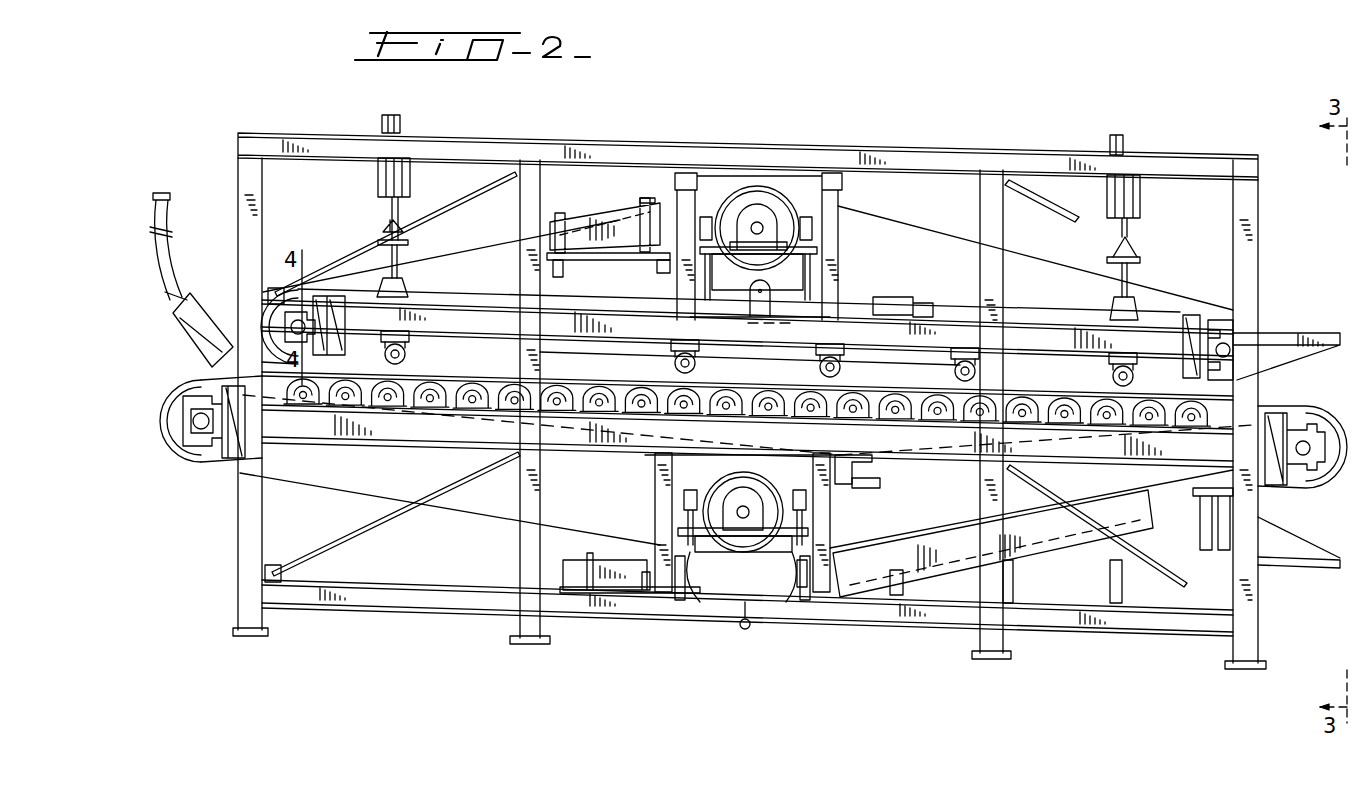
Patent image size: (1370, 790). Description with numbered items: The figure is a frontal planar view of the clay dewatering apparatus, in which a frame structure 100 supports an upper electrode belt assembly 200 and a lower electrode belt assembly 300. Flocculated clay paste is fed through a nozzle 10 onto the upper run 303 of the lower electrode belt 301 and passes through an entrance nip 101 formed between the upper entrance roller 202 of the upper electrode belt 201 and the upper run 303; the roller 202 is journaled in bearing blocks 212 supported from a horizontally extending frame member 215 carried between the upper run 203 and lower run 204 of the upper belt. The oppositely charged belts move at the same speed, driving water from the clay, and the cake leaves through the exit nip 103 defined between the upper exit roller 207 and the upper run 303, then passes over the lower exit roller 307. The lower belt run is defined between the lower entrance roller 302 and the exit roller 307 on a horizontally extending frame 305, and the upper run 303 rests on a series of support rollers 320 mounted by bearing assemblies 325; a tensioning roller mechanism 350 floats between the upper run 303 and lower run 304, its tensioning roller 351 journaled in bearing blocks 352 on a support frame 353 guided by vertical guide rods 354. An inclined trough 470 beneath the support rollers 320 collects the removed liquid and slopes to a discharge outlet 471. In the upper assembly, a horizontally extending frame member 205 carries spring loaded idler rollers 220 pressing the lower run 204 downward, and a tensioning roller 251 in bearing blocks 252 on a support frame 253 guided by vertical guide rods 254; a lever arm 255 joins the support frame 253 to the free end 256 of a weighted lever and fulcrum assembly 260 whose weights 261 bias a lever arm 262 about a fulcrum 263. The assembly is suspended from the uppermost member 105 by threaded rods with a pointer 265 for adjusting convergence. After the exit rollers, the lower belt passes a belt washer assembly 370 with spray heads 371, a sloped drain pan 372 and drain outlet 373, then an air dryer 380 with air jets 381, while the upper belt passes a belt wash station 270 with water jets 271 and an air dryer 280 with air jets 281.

The nozzle 10 is at (196, 336).
The frame structure 100 is at (548, 630).
The entrance nip 101 is at (262, 370).
The exit nip 103 is at (1236, 395).
The uppermost member 105 is at (460, 134).
The upper electrode belt assembly 200 is at (755, 392).
The upper electrode belt 201 is at (462, 246).
The upper entrance roller 202 is at (270, 314).
The upper run 203 is at (926, 229).
The lower run 204 is at (716, 360).
The horizontally extending frame member 205 is at (666, 339).
The upper exit roller 207 is at (1262, 333).
The bearing block 212 is at (312, 308).
The horizontally extending frame member 215 is at (345, 325).
The spring loaded idler rollers 220 is at (850, 373).
The tensioning roller 251 is at (750, 212).
The bearing blocks 252 is at (762, 218).
The support frame 253 is at (738, 300).
The vertical guide rods 254 is at (668, 264).
The lever arm 255 is at (772, 312).
The free end 256 is at (930, 303).
The weighted lever and fulcrum assembly 260 is at (764, 194).
The weights 261 is at (1208, 239).
The lever arm 262 is at (411, 237).
The fulcrum 263 is at (430, 262).
The pointer 265 is at (394, 115).
The belt wash station 270 is at (610, 196).
The water jets 271 is at (658, 182).
The air dryer 280 is at (562, 226).
The air jets 281 is at (560, 232).
The lower electrode belt assembly 300 is at (755, 469).
The lower electrode belt 301 is at (415, 506).
The lower entrance roller 302 is at (192, 456).
The upper run 303 is at (586, 432).
The lower run 304 is at (470, 508).
The horizontally extending frame 305 is at (776, 441).
The lower exit roller 307 is at (1335, 422).
The support rollers 320 is at (440, 414).
The bearing assemblies 325 is at (400, 412).
The tensioning roller mechanism 350 is at (742, 555).
The tensioning roller 351 is at (752, 486).
The bearing block 352 is at (745, 536).
The support frame 353 is at (705, 612).
The vertical guide rods 354 is at (688, 602).
The belt washer assembly 370 is at (1068, 568).
The spray heads 371 is at (1016, 578).
The drain pan 372 is at (965, 546).
The drain outlet 373 is at (750, 632).
The air dryer 380 is at (630, 578).
The air jets 381 is at (612, 560).
The inclined trough 470 is at (866, 478).
The discharge outlet 471 is at (850, 492).